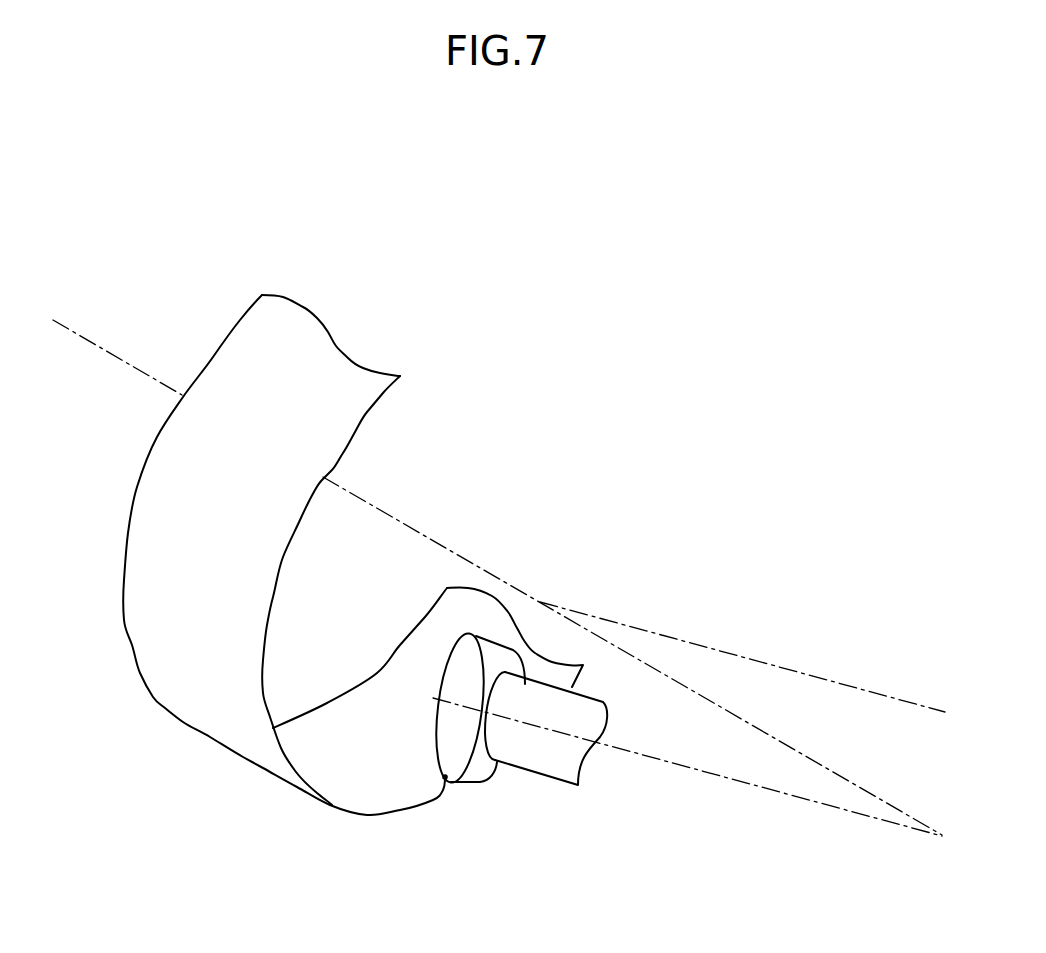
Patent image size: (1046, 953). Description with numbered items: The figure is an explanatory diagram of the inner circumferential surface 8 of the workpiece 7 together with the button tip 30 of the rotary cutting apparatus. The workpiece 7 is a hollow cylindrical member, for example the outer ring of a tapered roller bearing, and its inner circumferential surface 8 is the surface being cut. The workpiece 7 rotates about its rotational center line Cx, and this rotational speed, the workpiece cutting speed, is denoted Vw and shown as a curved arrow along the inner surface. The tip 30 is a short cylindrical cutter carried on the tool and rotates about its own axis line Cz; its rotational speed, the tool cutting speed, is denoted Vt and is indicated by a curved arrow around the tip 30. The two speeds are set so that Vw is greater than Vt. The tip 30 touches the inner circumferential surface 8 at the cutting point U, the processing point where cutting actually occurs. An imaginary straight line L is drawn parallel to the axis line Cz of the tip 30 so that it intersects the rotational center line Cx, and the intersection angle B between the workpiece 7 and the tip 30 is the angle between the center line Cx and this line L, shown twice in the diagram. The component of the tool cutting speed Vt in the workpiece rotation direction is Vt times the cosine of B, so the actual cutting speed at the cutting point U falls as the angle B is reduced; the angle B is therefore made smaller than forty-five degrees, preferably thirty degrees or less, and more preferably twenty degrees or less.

The workpiece 7 is at (262, 768).
The inner circumferential surface 8 is at (372, 693).
The button tip 30 is at (460, 768).
The cutting point U is at (445, 781).
The rotational center line of the workpiece Cx is at (392, 515).
The axis line of the tip Cz is at (757, 785).
The imaginary straight line L is at (868, 693).
The intersection angle B is at (716, 706).
The tool cutting speed Vt is at (433, 686).
The workpiece cutting speed Vw is at (350, 762).